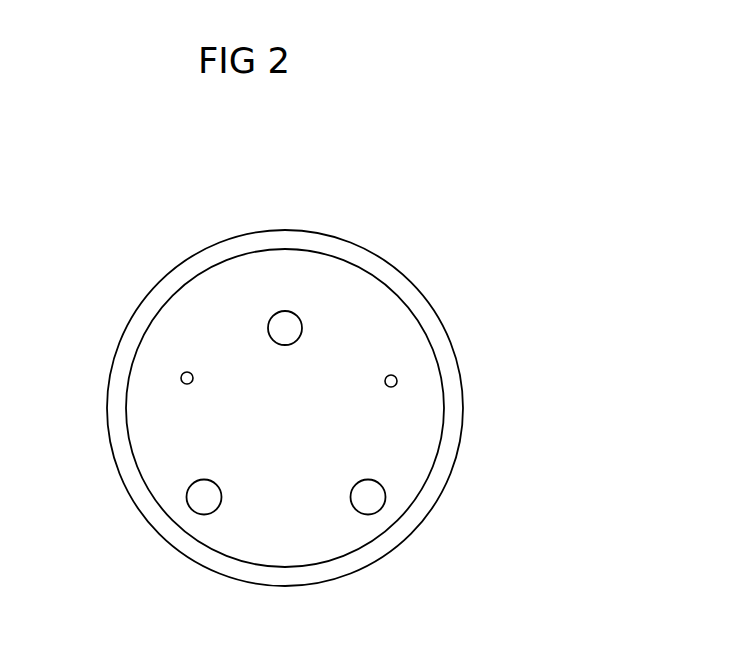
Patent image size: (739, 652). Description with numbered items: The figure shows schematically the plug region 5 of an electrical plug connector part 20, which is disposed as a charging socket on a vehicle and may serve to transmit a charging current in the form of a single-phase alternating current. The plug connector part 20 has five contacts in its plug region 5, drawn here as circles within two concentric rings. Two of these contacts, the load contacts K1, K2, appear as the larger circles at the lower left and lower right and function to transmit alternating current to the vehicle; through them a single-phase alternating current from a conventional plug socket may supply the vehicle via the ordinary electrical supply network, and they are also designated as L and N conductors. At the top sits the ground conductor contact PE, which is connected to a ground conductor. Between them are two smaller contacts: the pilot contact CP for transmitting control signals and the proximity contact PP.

The electrical plug connector part 20 is at (416, 245).
The plug region 5 is at (420, 445).
The ground conductor contact PE is at (280, 311).
The proximity contact PP is at (181, 376).
The pilot contact CP is at (397, 378).
The load contact K1 is at (190, 511).
The load contact K2 is at (381, 510).